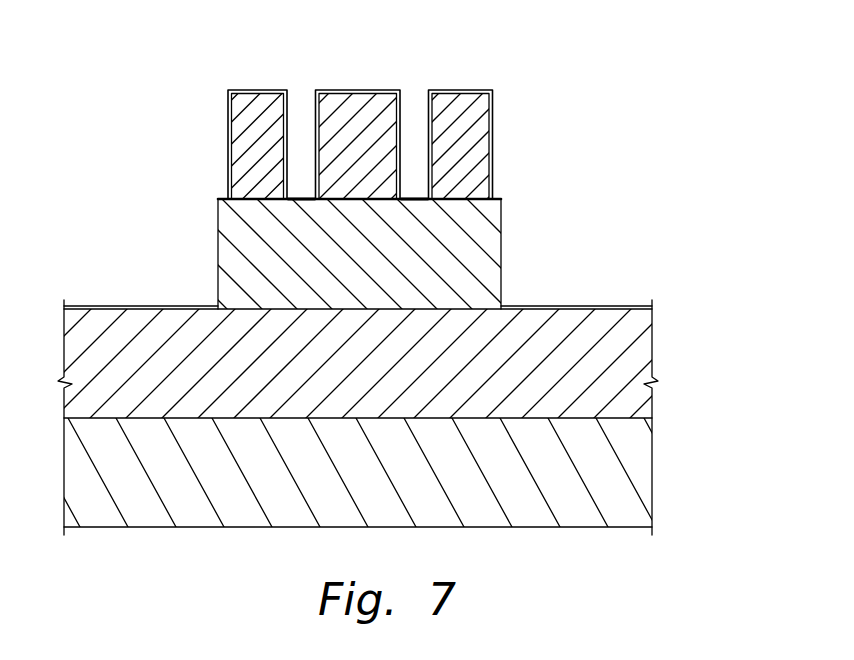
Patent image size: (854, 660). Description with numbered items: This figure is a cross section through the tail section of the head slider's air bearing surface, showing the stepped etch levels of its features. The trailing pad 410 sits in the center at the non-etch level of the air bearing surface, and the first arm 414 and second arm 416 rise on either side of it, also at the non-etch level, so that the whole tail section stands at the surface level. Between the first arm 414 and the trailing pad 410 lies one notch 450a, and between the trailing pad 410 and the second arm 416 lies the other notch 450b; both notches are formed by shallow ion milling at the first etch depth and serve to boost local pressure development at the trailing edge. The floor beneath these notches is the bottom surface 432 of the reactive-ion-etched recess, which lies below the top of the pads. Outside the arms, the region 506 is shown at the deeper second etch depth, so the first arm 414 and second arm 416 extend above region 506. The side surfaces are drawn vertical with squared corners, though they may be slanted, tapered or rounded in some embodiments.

The trailing pad 410 is at (352, 90).
The first arm 414 is at (252, 90).
The second arm 416 is at (467, 90).
The bottom surface 432 is at (302, 185).
The notch 450a is at (301, 67).
The notch 450b is at (413, 64).
The region 506 is at (111, 307).